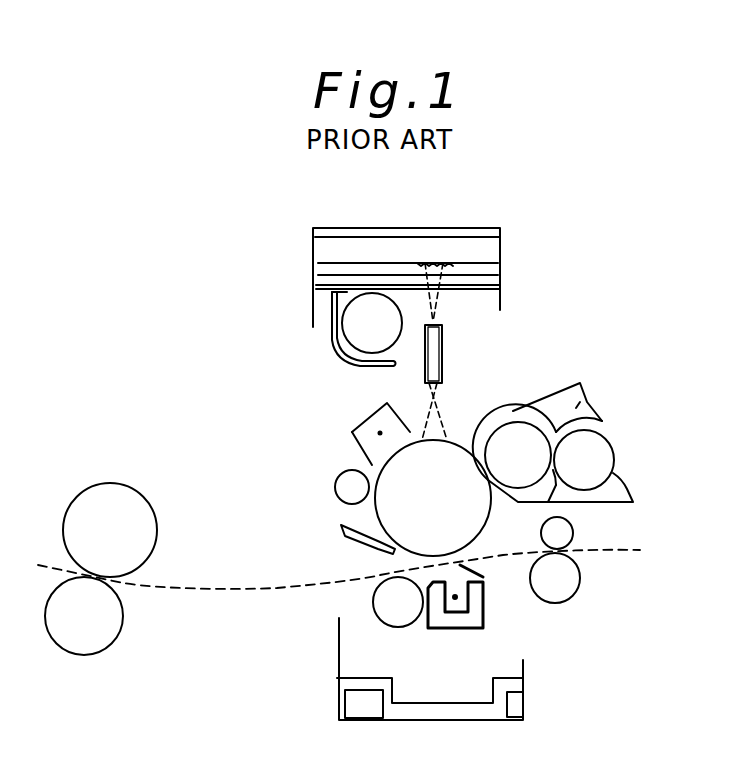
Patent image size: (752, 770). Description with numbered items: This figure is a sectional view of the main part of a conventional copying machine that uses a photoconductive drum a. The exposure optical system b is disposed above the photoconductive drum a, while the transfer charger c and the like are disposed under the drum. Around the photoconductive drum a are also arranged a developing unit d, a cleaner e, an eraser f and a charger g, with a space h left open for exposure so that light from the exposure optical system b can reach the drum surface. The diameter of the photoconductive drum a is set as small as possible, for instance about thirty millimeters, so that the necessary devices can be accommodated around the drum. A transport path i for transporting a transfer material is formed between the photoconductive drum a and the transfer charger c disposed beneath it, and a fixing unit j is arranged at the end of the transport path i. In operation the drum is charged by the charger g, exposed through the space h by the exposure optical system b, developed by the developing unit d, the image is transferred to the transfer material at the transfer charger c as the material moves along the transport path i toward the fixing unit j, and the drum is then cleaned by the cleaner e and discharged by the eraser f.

The photoconductive drum a is at (480, 520).
The exposure optical system b is at (452, 353).
The transfer charger c is at (473, 608).
The developing unit d is at (582, 401).
The cleaner e is at (343, 540).
The eraser f is at (335, 484).
The charger g is at (365, 420).
The space for exposure h is at (452, 439).
The transport path i is at (638, 545).
The fixing unit j is at (108, 645).